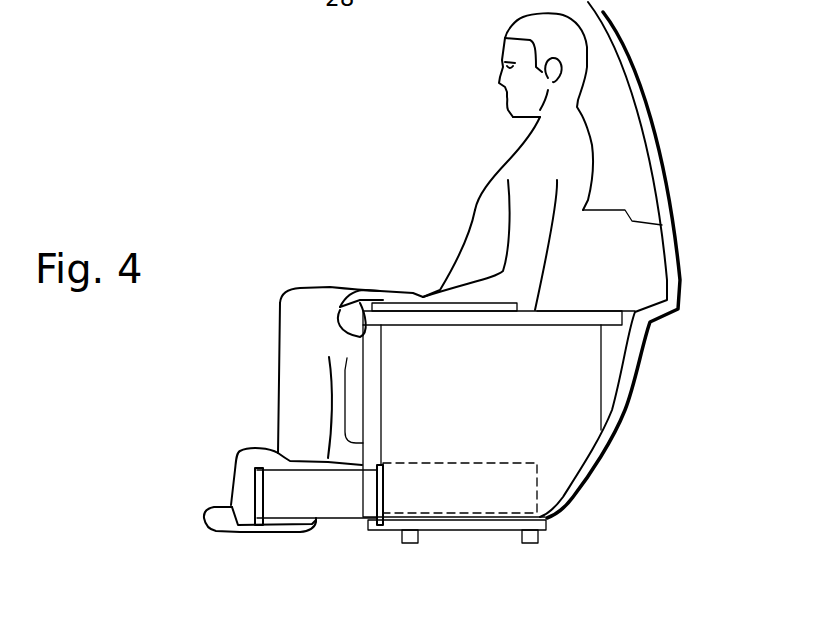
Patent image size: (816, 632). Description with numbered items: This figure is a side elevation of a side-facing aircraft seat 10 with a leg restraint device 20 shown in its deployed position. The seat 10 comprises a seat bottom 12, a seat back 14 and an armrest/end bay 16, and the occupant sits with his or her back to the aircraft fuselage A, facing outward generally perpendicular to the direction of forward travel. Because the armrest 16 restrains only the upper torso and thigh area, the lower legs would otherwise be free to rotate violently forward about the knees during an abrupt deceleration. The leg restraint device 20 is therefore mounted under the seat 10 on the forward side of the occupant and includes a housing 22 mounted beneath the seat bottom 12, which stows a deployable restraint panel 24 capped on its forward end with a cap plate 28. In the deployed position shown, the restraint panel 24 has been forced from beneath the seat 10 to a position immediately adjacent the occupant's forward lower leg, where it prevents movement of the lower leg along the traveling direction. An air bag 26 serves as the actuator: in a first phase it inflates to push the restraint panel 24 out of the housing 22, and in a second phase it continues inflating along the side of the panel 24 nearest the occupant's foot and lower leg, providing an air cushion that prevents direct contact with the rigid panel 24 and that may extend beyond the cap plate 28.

The seat 10 is at (619, 158).
The aircraft fuselage A is at (645, 84).
The seat bottom 12 is at (353, 377).
The seat back 14 is at (640, 250).
The armrest/end bay 16 is at (563, 390).
The leg restraint device 20 is at (463, 567).
The housing 22 is at (512, 497).
The restraint panel 24 is at (332, 505).
The air bag 26 is at (287, 465).
The cap plate 28 is at (255, 492).